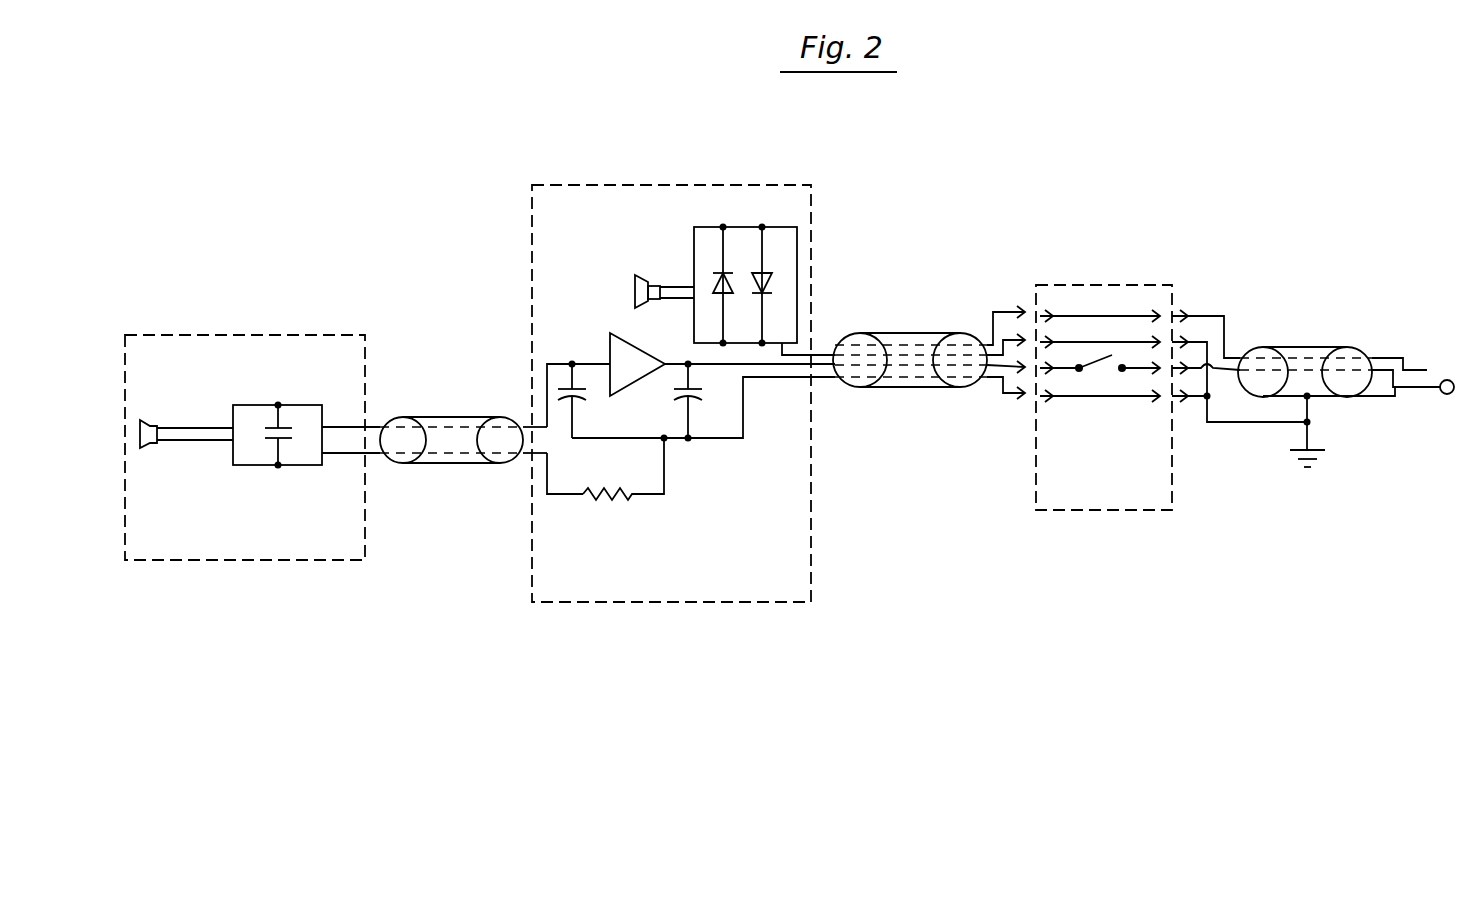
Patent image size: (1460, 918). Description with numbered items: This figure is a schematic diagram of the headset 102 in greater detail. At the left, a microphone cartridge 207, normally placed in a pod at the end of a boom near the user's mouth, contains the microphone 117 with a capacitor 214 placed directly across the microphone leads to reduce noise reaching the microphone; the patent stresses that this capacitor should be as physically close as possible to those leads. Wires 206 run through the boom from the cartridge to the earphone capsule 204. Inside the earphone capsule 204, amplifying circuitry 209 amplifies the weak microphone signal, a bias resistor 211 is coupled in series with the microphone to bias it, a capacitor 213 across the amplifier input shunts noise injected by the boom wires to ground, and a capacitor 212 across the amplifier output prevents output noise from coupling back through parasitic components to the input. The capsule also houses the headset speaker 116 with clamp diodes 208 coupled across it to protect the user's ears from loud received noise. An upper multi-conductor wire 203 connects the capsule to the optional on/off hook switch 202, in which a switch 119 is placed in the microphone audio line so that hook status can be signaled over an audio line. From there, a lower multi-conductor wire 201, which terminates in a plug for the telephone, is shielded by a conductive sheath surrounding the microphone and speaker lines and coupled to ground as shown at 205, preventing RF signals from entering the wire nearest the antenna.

The headset 102 is at (500, 193).
The microphone cartridge 207 is at (178, 370).
The microphone 117 is at (148, 420).
The capacitor 214 is at (290, 427).
The wires 206 is at (473, 416).
The earphone capsule 204 is at (760, 495).
The amplifying circuitry 209 is at (610, 345).
The capacitor 213 is at (585, 397).
The capacitor 212 is at (705, 398).
The bias resistor 211 is at (610, 490).
The headset speaker 116 is at (635, 285).
The clamp diodes 208 is at (758, 250).
The upper multi-conductor wire 203 is at (917, 330).
The on/off hook switch 202 is at (1097, 283).
The switch 119 is at (1085, 370).
The lower multi-conductor wire 201 is at (1300, 345).
The ground 205 is at (1310, 422).